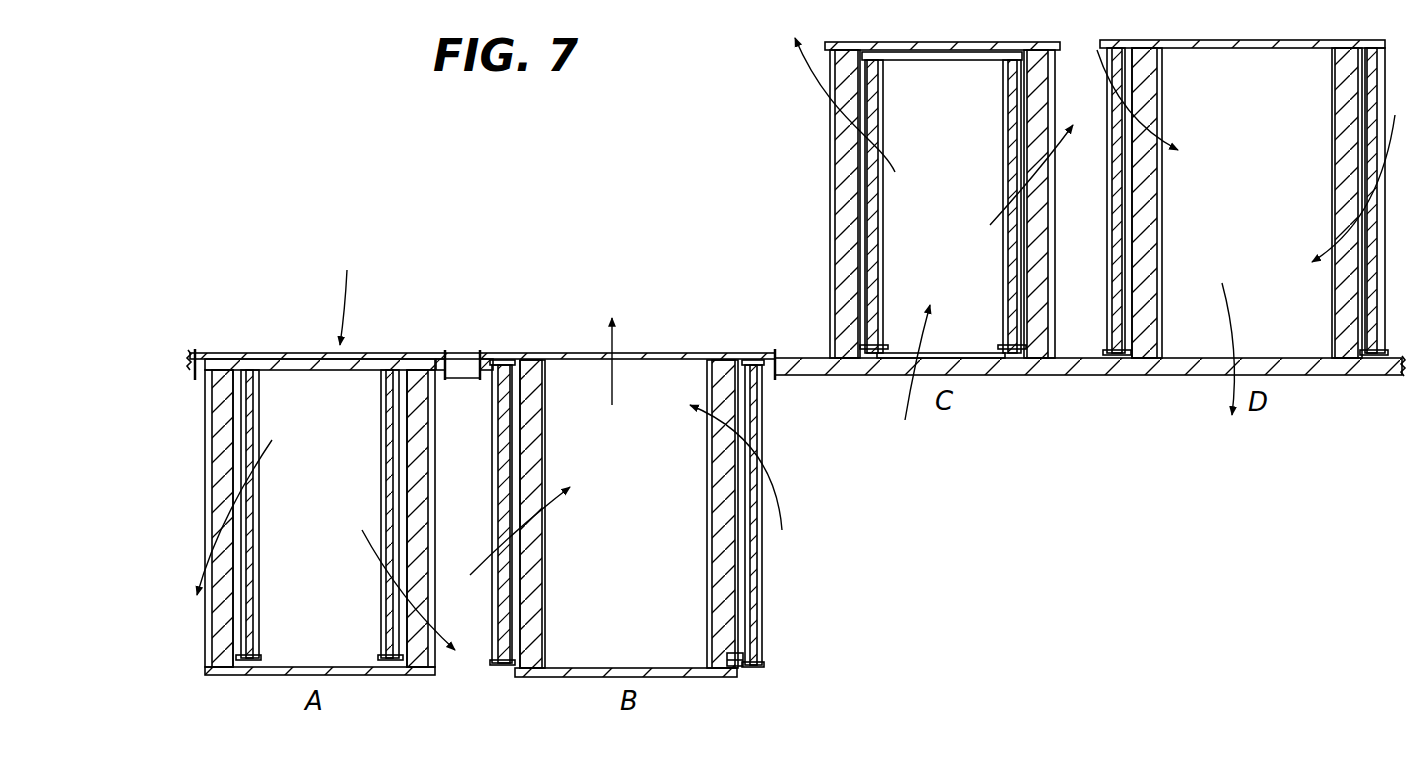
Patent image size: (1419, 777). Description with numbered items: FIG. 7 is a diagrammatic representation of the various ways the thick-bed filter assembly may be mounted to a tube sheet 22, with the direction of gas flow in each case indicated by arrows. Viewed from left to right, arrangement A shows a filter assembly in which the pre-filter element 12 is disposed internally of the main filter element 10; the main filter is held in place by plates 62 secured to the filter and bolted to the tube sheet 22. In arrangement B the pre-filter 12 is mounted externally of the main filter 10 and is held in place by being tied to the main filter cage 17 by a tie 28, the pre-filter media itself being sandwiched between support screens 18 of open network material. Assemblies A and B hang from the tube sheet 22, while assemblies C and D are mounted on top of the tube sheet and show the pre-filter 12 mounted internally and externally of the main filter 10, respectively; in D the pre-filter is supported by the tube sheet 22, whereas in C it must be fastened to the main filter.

The main filter element 10 is at (478, 456).
The pre-filter element 12 is at (372, 459).
The main filter cage 17 is at (713, 565).
The support screen 18 is at (742, 571).
The tube sheet 22 is at (832, 370).
The tie 28 is at (726, 668).
The plate 62 is at (420, 360).